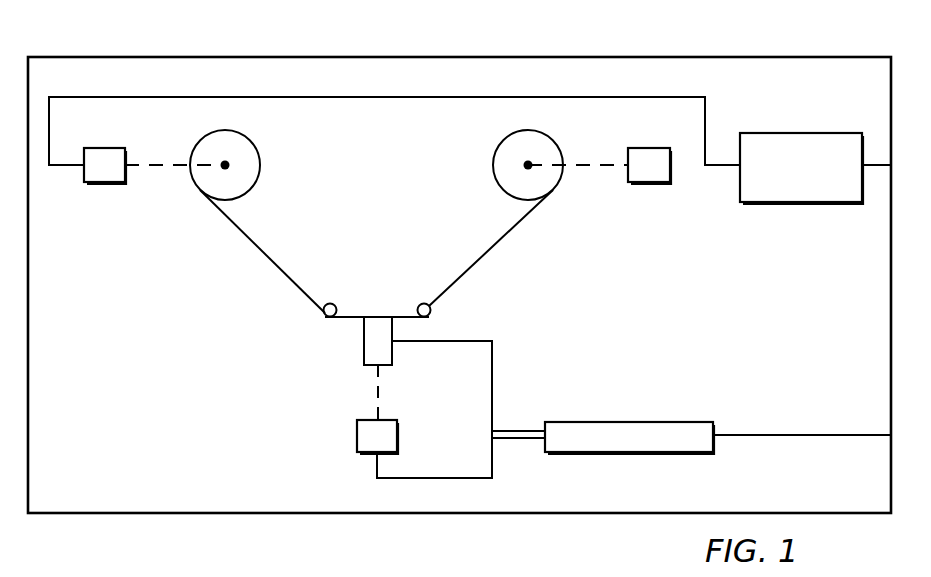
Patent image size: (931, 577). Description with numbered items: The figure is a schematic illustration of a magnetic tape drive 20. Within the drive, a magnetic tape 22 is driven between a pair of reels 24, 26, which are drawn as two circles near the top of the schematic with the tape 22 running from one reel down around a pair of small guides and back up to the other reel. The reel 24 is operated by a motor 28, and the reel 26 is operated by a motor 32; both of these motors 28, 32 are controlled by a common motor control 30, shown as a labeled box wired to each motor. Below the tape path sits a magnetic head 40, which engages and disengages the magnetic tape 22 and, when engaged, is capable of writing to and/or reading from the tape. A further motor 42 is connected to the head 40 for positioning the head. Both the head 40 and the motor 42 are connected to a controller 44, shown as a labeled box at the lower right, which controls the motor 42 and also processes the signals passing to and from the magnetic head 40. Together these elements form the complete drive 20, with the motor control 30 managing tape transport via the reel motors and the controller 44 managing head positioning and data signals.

The magnetic tape drive 20 is at (472, 56).
The magnetic tape 22 is at (485, 258).
The reel 24 is at (222, 131).
The reel 26 is at (530, 131).
The motor 28 is at (105, 183).
The motor control 30 is at (800, 203).
The motor 32 is at (648, 183).
The magnetic head 40 is at (364, 341).
The motor 42 is at (357, 437).
The controller 44 is at (628, 453).